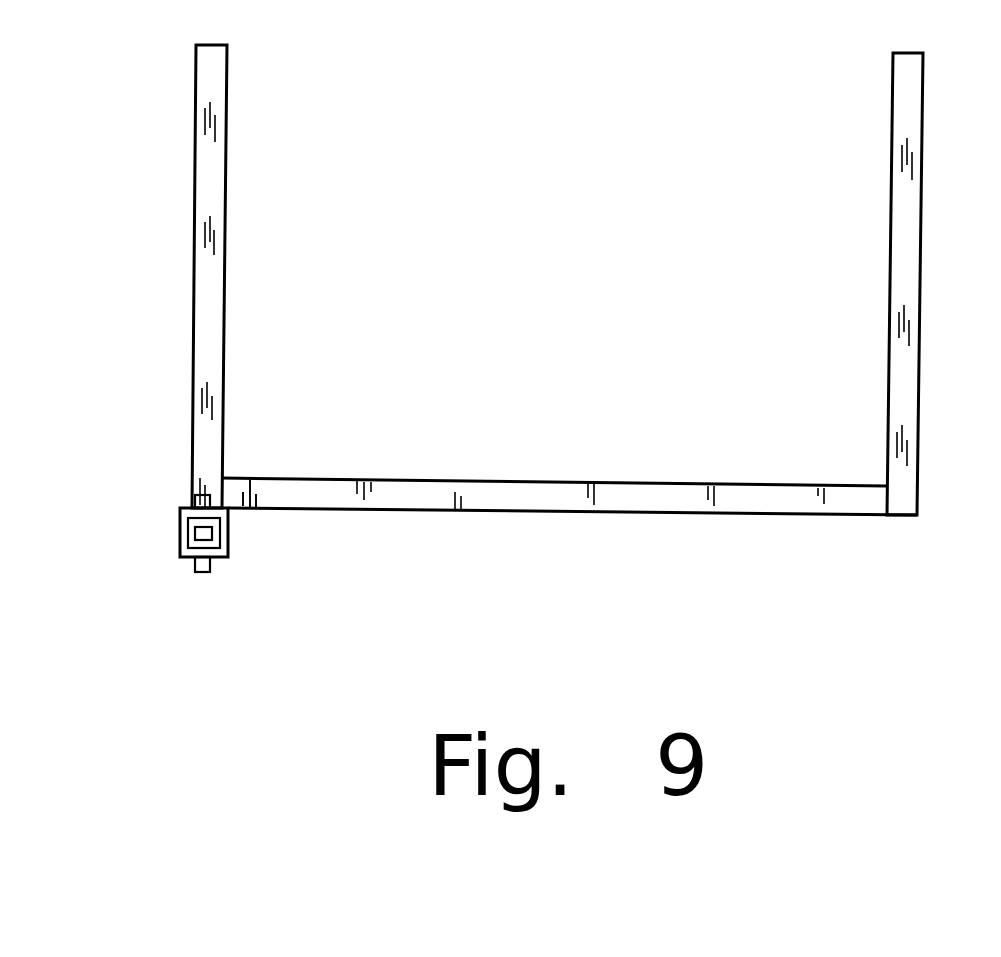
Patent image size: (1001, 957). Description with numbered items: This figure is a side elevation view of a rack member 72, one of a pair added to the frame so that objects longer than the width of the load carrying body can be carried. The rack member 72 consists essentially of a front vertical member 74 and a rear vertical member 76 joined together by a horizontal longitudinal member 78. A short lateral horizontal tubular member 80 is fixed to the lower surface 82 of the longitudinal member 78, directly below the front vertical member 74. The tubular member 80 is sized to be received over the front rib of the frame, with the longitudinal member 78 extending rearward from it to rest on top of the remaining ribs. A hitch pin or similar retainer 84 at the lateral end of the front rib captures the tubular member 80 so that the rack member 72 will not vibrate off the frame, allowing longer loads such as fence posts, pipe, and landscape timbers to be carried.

The rack member 72 is at (108, 147).
The front vertical member 74 is at (193, 303).
The rear vertical member 76 is at (890, 268).
The horizontal longitudinal member 78 is at (633, 480).
The lateral horizontal tubular member 80 is at (180, 536).
The lower surface 82 is at (253, 511).
The hitch pin or similar retainer 84 is at (203, 496).